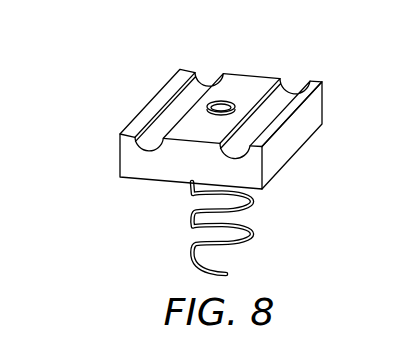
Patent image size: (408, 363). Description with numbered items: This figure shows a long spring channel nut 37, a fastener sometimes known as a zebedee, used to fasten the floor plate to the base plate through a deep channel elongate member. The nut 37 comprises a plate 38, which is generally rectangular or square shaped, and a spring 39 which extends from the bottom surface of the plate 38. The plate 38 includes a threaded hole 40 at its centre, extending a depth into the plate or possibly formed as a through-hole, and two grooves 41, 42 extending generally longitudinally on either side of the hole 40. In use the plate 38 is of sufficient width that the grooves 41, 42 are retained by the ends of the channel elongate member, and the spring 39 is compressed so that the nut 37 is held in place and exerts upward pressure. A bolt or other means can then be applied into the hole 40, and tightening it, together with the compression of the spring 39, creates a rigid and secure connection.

The nut 37 is at (219, 109).
The plate 38 is at (120, 155).
The spring 39 is at (190, 214).
The threaded hole 40 is at (222, 101).
The groove 41 is at (207, 82).
The groove 42 is at (292, 84).